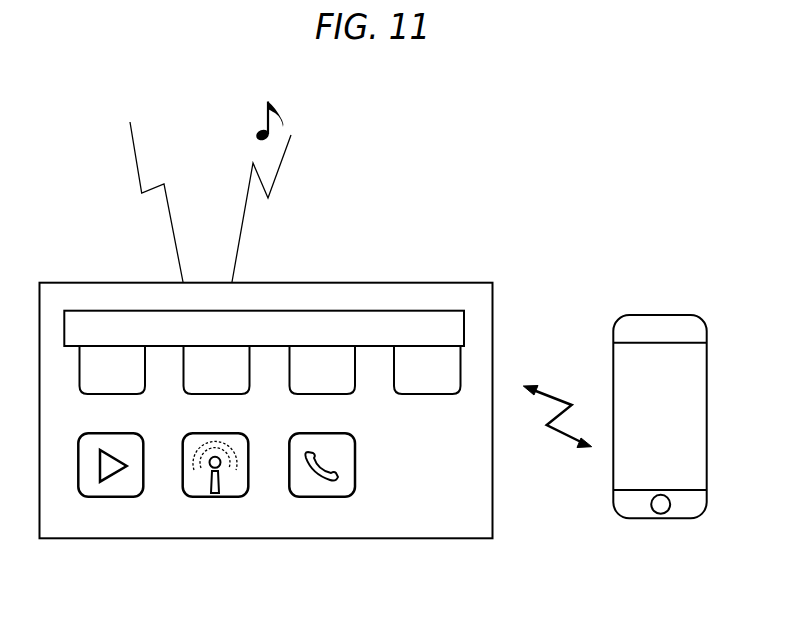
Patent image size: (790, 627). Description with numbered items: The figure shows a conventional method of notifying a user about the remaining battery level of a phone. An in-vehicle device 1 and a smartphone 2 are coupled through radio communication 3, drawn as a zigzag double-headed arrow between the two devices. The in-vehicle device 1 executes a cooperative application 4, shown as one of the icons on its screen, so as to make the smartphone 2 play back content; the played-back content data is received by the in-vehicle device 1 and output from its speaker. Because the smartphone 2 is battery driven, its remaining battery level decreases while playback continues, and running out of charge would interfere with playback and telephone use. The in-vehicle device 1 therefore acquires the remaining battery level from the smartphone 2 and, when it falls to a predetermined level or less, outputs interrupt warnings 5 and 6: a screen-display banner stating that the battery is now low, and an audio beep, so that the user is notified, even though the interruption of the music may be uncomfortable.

The in-vehicle device 1 is at (445, 281).
The smartphone 2 is at (667, 314).
The radio communication 3 is at (557, 396).
The cooperative application 4 is at (78, 469).
The interrupt warning 5 is at (465, 327).
The interrupt warning 6 is at (298, 137).